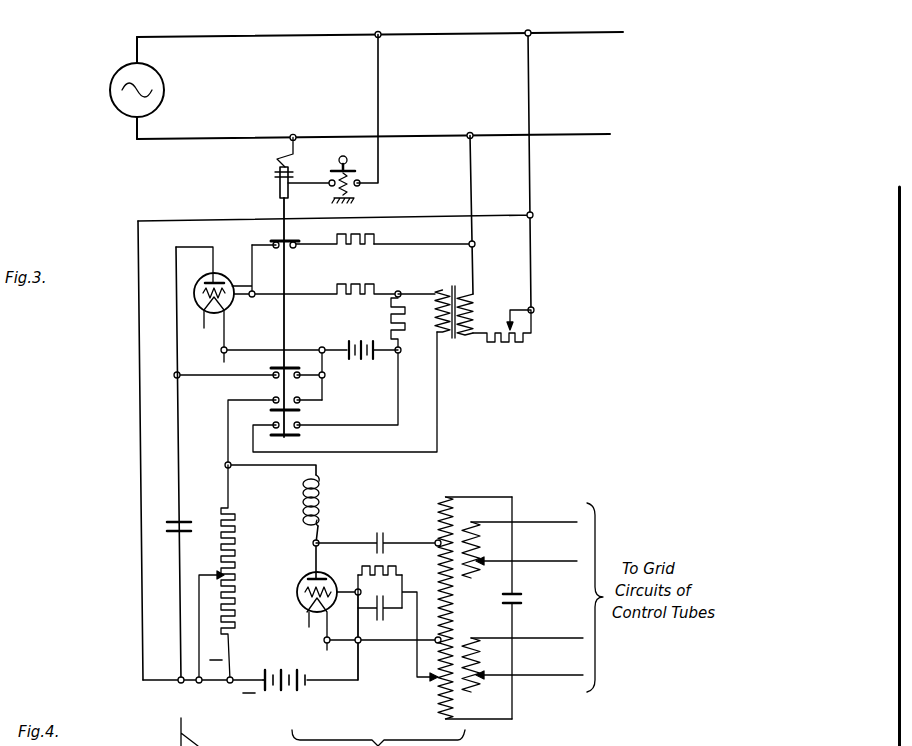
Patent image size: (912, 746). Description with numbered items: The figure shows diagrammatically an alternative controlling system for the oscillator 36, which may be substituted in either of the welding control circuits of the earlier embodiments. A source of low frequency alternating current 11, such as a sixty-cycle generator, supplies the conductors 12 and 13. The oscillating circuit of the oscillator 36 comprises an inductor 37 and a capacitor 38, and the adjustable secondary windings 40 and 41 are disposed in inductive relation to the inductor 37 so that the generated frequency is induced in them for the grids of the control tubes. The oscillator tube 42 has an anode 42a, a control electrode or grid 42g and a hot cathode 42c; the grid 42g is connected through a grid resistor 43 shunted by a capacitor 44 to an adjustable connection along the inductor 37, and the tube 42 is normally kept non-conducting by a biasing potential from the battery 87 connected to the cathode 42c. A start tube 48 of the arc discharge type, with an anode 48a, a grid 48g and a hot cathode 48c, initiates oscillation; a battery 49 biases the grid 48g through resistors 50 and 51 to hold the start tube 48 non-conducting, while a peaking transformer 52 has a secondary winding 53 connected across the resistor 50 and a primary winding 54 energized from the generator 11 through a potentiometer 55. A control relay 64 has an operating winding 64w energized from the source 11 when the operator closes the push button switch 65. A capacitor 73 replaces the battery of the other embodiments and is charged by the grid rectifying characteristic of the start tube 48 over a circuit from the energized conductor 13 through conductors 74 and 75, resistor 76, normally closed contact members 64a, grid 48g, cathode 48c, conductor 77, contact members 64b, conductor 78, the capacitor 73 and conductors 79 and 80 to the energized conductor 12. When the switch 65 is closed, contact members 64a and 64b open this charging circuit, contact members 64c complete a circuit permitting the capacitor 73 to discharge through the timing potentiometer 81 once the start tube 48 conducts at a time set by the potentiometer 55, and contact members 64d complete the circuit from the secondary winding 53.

The source of low frequency alternating current 11 is at (188, 74).
The conductor 12 is at (488, 33).
The conductor 13 is at (430, 137).
The oscillator 36 is at (393, 723).
The inductor 37 is at (456, 611).
The capacitor 38 is at (525, 596).
The secondary winding 40 is at (477, 552).
The secondary winding 41 is at (477, 671).
The oscillator tube 42 is at (314, 597).
The anode 42a is at (321, 577).
The hot cathode 42c is at (329, 611).
The control electrode or grid 42g is at (305, 590).
The grid resistor 43 is at (386, 566).
The capacitor 44 is at (387, 620).
The start tube 48 is at (230, 299).
The anode 48a is at (223, 282).
The hot cathode 48c is at (234, 306).
The control electrode or grid 48g is at (247, 286).
The battery 49 is at (351, 360).
The resistor 50 is at (391, 325).
The resistor 51 is at (356, 288).
The peaking transformer 52 is at (452, 302).
The secondary winding 53 is at (436, 324).
The primary winding 54 is at (478, 304).
The potentiometer 55 is at (508, 349).
The control relay 64 is at (250, 181).
The contact members 64a is at (294, 248).
The contact members 64b is at (249, 376).
The contact members 64c is at (276, 400).
The contact members 64d is at (300, 436).
The operating winding 64w is at (289, 161).
The push button switch 65 is at (380, 203).
The capacitor 73 is at (170, 521).
The conductor 74 is at (471, 200).
The conductor 75 is at (414, 244).
The resistor 76 is at (377, 244).
The conductor 77 is at (319, 349).
The conductor 78 is at (178, 402).
The conductor 79 is at (180, 599).
The conductor 80 is at (140, 451).
The timing potentiometer 81 is at (238, 527).
The battery 87 is at (292, 665).